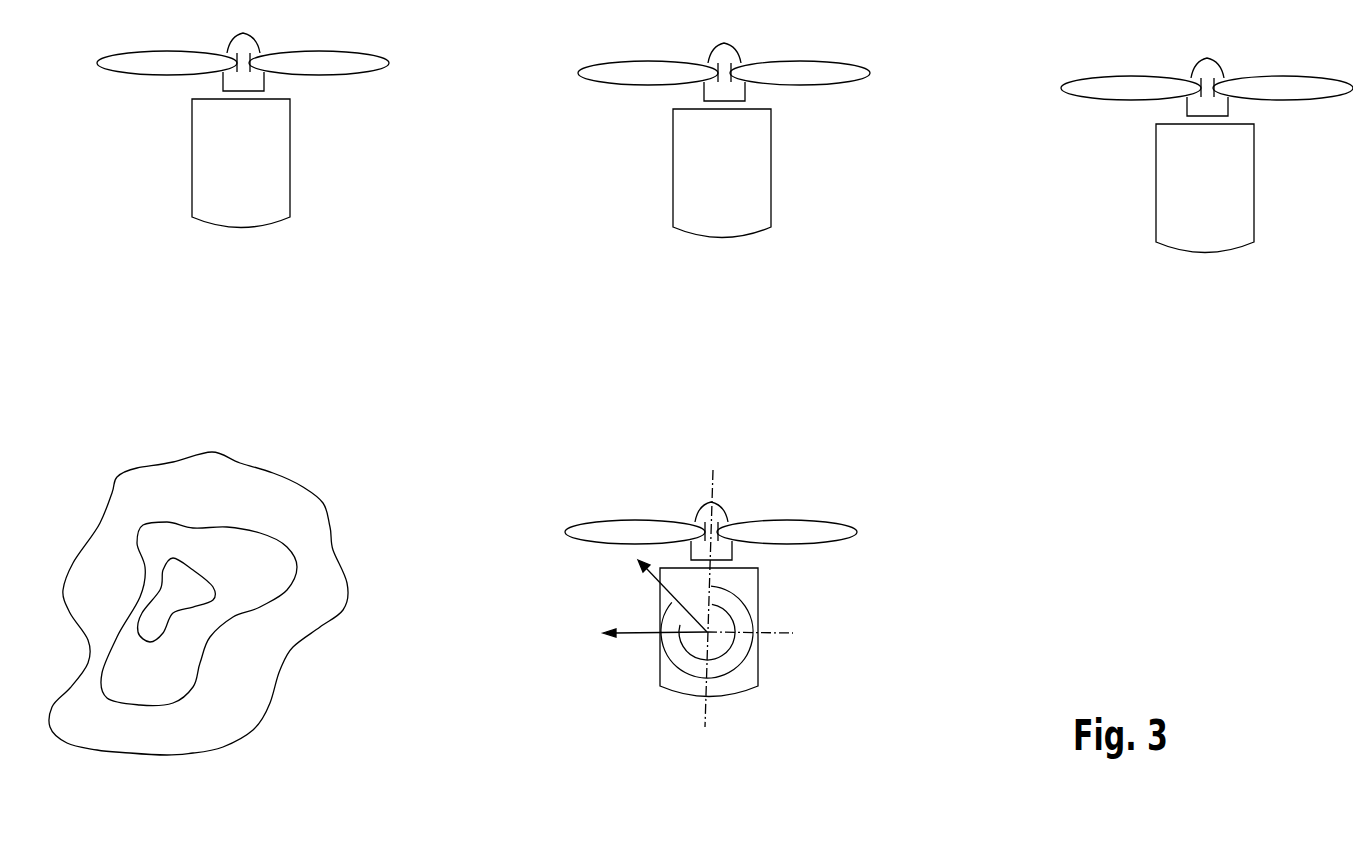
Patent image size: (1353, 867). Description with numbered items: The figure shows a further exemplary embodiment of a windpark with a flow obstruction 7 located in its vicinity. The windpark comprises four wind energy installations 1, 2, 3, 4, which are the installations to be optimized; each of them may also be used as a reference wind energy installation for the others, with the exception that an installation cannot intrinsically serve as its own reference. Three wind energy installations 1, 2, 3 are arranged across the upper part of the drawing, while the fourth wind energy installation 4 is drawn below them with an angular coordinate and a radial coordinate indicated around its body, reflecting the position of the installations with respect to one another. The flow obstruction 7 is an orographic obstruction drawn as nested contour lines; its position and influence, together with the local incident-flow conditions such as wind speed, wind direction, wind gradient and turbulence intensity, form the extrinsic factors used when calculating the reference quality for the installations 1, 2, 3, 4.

The wind energy installation 1 is at (302, 235).
The wind energy installation 2 is at (775, 245).
The wind energy installation 3 is at (1265, 262).
The wind energy installation 4 is at (762, 700).
The flow obstruction 7 is at (315, 688).